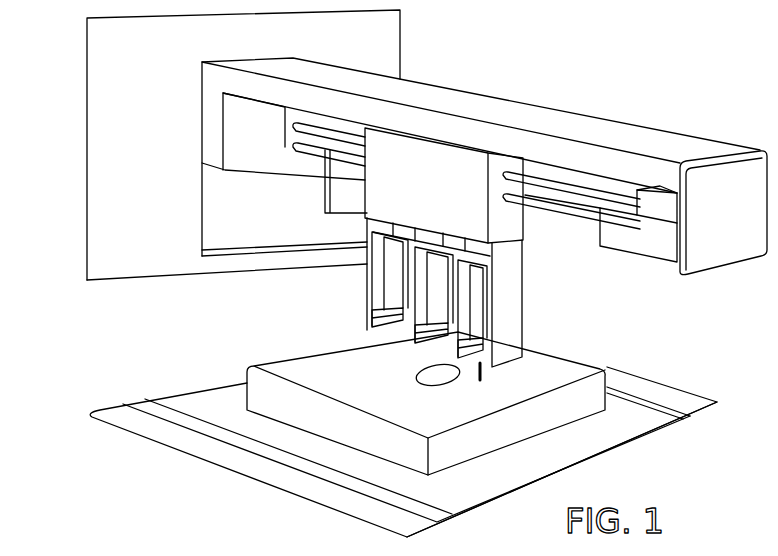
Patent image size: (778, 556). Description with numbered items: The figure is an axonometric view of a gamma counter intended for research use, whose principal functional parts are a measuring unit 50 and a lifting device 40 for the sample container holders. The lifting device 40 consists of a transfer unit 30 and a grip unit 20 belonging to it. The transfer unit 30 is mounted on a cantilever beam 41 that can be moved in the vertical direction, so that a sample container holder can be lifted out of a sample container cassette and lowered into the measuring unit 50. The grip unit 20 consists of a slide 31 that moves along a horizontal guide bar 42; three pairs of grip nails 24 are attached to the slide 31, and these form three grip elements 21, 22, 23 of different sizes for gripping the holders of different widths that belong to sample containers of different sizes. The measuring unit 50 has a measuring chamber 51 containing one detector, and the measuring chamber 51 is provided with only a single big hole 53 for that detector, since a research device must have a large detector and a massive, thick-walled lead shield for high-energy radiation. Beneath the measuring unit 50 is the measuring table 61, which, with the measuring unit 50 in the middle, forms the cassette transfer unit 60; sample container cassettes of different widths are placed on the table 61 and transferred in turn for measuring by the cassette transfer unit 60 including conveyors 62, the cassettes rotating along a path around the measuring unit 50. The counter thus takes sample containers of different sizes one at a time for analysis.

The grip unit 20 is at (453, 305).
The grip element 21 is at (482, 381).
The grip element 22 is at (440, 347).
The grip element 23 is at (398, 336).
The grip nails 24 is at (392, 307).
The transfer unit 30 is at (379, 128).
The slide 31 is at (455, 130).
The lifting device 40 is at (484, 158).
The cantilever beam 41 is at (487, 104).
The horizontal guide bar 42 is at (600, 190).
The measuring unit 50 is at (428, 396).
The measuring chamber 51 is at (283, 372).
The hole 53 is at (445, 382).
The cassette transfer unit 60 is at (420, 444).
The measuring table 61 is at (638, 423).
The conveyors 62 is at (660, 385).